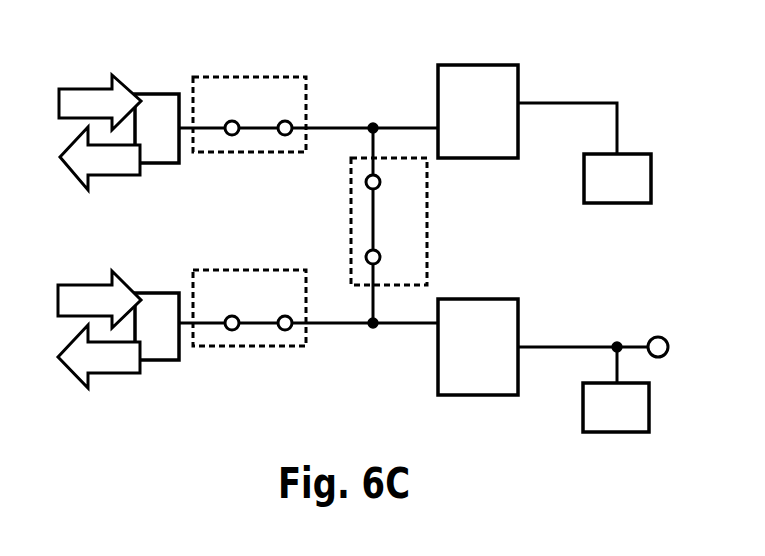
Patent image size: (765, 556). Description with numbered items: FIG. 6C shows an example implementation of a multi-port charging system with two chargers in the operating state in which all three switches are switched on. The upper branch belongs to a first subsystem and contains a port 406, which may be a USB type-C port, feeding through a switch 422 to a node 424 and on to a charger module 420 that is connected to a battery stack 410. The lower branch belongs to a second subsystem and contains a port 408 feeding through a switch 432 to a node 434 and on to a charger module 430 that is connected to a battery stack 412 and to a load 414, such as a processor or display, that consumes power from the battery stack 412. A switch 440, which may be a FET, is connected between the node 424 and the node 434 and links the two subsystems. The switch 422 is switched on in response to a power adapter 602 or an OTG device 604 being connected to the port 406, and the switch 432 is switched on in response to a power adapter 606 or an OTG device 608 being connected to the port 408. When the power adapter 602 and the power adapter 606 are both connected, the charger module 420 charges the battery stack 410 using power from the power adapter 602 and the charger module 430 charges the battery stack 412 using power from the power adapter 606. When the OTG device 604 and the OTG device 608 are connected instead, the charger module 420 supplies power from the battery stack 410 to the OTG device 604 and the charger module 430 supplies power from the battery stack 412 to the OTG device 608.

The port 406 is at (150, 93).
The port 408 is at (157, 292).
The battery stack 410 is at (599, 189).
The battery stack 412 is at (598, 419).
The load 414 is at (645, 331).
The charger module 420 is at (460, 124).
The switch 422 is at (255, 77).
The node 424 is at (377, 118).
The charger module 430 is at (460, 359).
The switch 432 is at (258, 270).
The node 434 is at (373, 337).
The switch 440 is at (351, 227).
The power adapter 602 is at (117, 115).
The OTG device 604 is at (118, 171).
The power adapter 606 is at (117, 312).
The OTG device 608 is at (118, 369).